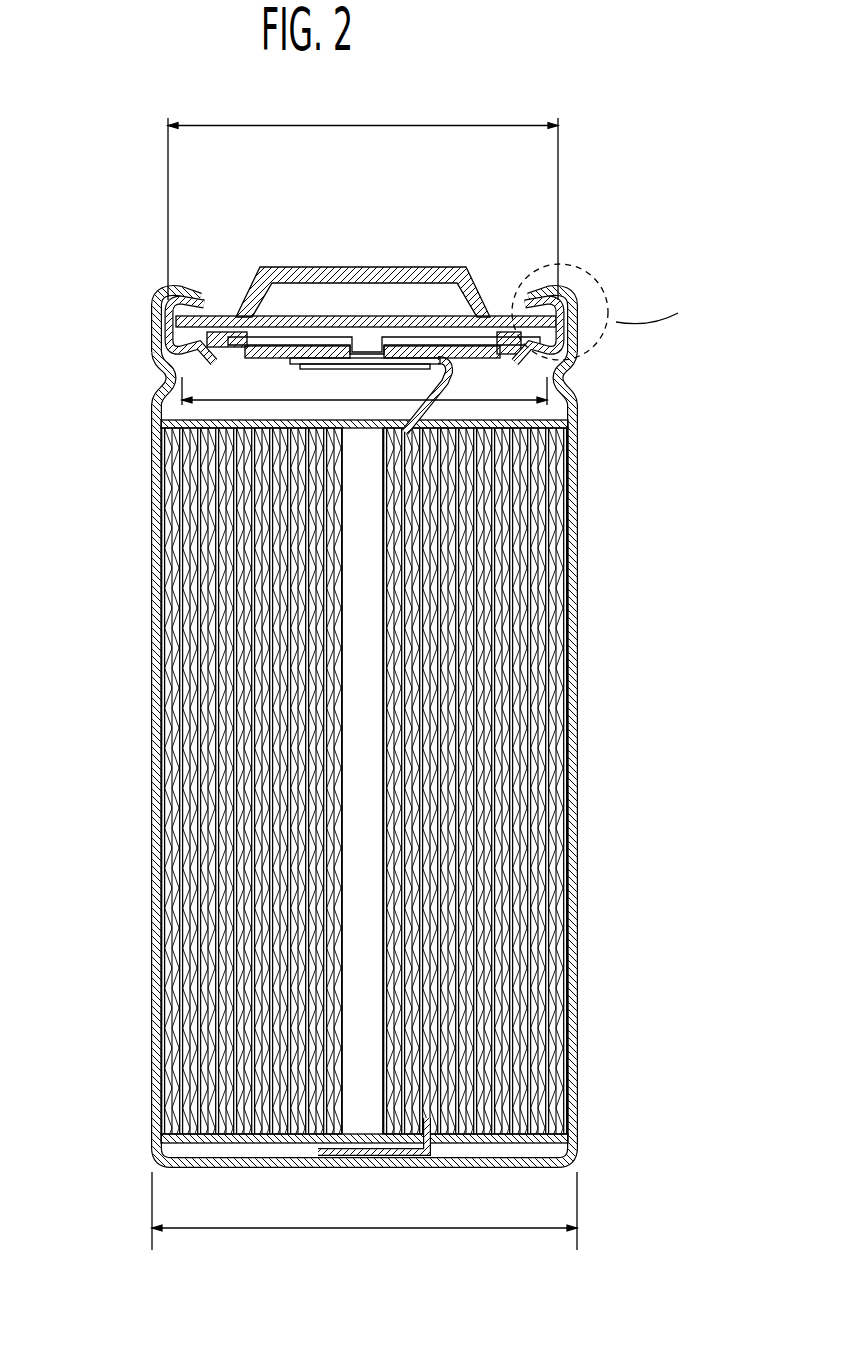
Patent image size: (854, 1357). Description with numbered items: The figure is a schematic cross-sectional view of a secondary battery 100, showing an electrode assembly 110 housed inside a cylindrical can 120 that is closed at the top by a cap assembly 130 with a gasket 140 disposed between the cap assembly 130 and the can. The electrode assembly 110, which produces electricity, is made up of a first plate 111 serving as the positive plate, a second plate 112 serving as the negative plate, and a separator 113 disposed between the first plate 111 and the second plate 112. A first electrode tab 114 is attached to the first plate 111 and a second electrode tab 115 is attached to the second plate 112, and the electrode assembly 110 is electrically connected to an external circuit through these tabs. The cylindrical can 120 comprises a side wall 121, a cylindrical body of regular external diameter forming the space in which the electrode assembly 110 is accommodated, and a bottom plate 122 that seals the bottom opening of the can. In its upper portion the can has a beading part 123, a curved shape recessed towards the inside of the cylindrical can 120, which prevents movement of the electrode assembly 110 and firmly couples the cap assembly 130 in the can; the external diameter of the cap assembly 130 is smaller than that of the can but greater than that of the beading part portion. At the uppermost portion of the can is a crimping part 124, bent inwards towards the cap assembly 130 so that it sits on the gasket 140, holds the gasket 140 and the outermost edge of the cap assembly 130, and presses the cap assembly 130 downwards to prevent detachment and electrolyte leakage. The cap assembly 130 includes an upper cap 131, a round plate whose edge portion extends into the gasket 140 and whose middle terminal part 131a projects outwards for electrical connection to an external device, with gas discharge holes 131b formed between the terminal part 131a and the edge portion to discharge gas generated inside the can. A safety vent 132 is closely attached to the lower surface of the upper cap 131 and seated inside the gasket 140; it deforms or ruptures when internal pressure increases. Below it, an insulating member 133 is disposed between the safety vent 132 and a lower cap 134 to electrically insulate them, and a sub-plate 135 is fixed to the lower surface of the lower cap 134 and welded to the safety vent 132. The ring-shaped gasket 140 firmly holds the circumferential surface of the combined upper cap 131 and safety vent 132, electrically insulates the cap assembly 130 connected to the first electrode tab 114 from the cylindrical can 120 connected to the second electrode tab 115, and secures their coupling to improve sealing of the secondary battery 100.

The secondary battery 100 is at (143, 178).
The electrode assembly 110 is at (678, 473).
The first plate 111 is at (560, 486).
The second plate 112 is at (565, 580).
The separator 113 is at (560, 540).
The first electrode tab 114 is at (450, 382).
The second electrode tab 115 is at (385, 1158).
The cylindrical can 120 is at (582, 650).
The side wall 121 is at (580, 1012).
The bottom plate 122 is at (455, 1169).
The beading part 123 is at (172, 362).
The crimping part 124 is at (167, 292).
The cap assembly 130 is at (525, 186).
The upper cap 131 is at (258, 224).
The terminal part 131a is at (290, 266).
The gas discharge holes 131b is at (250, 273).
The safety vent 132 is at (463, 330).
The insulating member 133 is at (505, 335).
The lower cap 134 is at (328, 360).
The sub-plate 135 is at (313, 366).
The gasket 140 is at (580, 340).